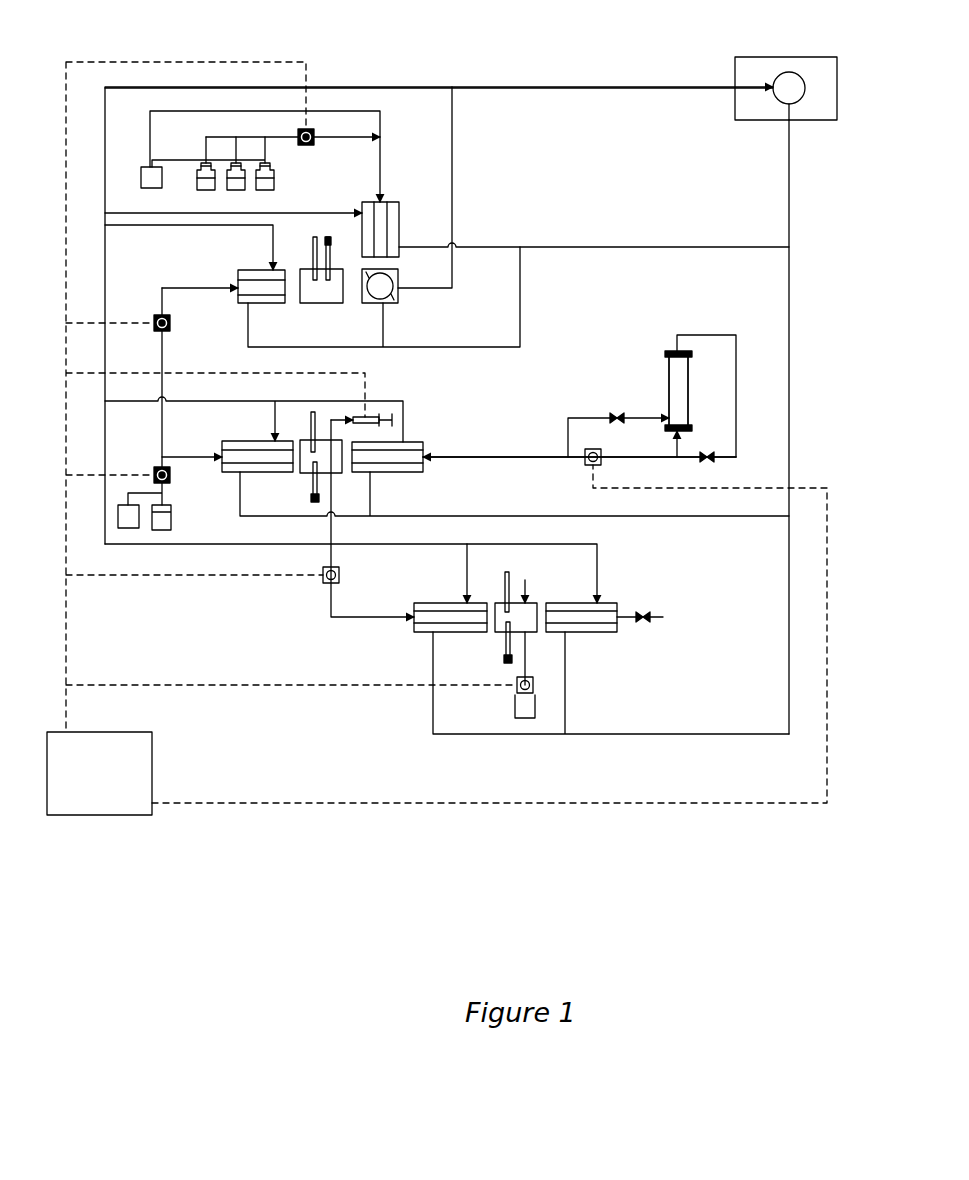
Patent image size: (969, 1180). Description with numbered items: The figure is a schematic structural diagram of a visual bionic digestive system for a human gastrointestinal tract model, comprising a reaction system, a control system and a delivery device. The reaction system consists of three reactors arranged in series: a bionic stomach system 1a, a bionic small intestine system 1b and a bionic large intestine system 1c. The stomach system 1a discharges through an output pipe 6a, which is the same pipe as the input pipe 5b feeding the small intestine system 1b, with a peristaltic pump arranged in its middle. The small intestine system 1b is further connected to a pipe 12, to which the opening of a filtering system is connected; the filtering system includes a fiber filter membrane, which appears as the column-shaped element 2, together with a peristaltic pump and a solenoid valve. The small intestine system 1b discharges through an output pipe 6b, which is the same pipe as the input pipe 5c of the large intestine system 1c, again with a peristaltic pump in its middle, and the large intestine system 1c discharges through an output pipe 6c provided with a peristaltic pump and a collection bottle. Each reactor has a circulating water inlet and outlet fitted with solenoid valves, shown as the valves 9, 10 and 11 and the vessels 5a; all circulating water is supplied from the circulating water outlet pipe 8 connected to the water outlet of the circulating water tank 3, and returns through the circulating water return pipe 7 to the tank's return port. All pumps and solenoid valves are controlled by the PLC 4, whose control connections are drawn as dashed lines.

The bionic stomach system 1a is at (400, 305).
The bionic small intestine system 1b is at (425, 440).
The bionic large intestine system 1c is at (612, 598).
The separation column 2 is at (673, 378).
The circulating water tank 3 is at (757, 70).
The PLC 4 is at (137, 772).
The first column 5a is at (382, 163).
The input pipe 5b is at (164, 428).
The input pipe 5c is at (360, 620).
The output pipe 6a is at (192, 288).
The output pipe 6b is at (333, 552).
The output pipe 6c is at (527, 642).
The circulating water return pipe 7 is at (789, 180).
The circulating water outlet pipe 8 is at (607, 88).
The first control valve 9 is at (170, 327).
The second control valve 10 is at (318, 585).
The third control valve 11 is at (512, 691).
The pipe 12 is at (507, 457).